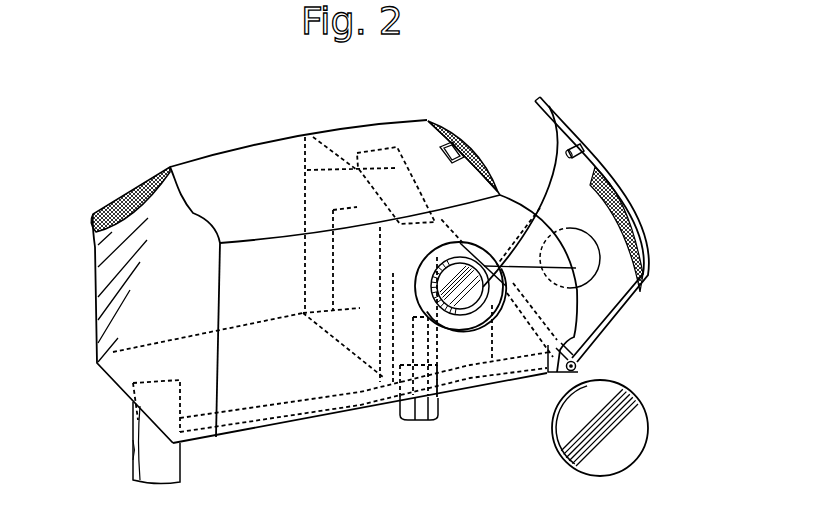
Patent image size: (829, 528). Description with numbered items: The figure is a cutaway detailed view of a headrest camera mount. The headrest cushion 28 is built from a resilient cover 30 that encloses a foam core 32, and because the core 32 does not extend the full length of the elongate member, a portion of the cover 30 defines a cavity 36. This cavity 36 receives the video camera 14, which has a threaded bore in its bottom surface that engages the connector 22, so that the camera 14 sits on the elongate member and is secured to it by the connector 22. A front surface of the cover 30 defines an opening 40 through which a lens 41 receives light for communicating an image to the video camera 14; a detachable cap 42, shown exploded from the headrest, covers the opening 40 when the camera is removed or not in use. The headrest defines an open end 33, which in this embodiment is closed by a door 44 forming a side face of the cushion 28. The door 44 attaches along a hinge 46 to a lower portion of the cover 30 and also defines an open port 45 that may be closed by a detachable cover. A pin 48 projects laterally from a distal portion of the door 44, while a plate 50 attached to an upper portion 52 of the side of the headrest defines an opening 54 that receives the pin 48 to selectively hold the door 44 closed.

The video camera 14 is at (306, 170).
The connector 22 is at (438, 412).
The cushion 28 is at (238, 158).
The resilient cover 30 is at (92, 231).
The foam core 32 is at (100, 312).
The open end 33 is at (467, 143).
The cavity 36 is at (333, 142).
The opening 40 is at (503, 298).
The lens 41 is at (590, 213).
The detachable cap 42 is at (640, 410).
The door 44 is at (620, 177).
The open port 45 is at (590, 217).
The hinge 46 is at (578, 368).
The pin 48 is at (573, 148).
The plate 50 is at (463, 157).
The upper portion 52 is at (430, 145).
The opening 54 is at (498, 190).